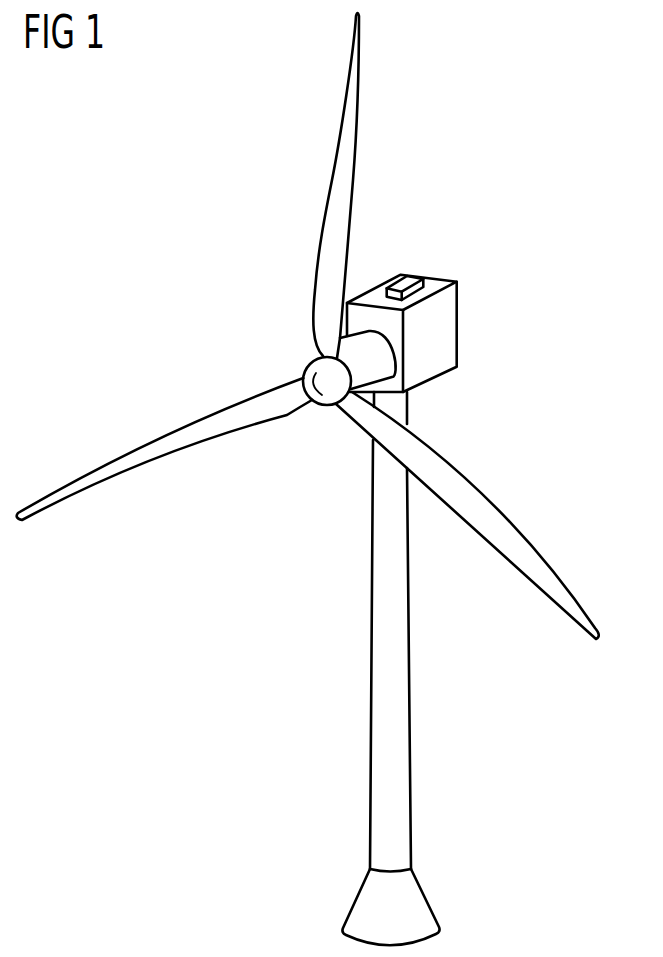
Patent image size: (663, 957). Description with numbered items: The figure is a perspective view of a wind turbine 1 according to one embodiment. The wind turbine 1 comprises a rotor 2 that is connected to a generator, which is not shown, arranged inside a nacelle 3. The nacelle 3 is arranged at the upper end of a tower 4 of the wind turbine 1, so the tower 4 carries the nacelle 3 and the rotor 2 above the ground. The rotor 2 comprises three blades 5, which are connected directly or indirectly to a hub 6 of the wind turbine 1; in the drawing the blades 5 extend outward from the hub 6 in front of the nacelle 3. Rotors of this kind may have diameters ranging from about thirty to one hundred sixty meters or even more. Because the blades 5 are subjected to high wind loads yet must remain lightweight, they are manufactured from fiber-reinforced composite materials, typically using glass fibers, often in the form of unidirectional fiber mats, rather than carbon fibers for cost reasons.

The wind turbine 1 is at (167, 203).
The rotor 2 is at (118, 435).
The nacelle 3 is at (445, 330).
The tower 4 is at (400, 723).
The blades 5 is at (190, 440).
The hub 6 is at (381, 355).